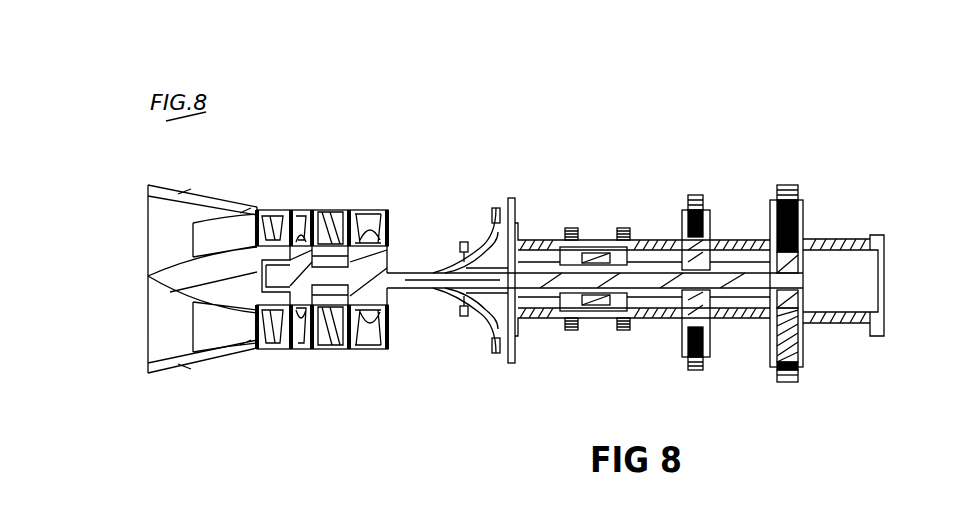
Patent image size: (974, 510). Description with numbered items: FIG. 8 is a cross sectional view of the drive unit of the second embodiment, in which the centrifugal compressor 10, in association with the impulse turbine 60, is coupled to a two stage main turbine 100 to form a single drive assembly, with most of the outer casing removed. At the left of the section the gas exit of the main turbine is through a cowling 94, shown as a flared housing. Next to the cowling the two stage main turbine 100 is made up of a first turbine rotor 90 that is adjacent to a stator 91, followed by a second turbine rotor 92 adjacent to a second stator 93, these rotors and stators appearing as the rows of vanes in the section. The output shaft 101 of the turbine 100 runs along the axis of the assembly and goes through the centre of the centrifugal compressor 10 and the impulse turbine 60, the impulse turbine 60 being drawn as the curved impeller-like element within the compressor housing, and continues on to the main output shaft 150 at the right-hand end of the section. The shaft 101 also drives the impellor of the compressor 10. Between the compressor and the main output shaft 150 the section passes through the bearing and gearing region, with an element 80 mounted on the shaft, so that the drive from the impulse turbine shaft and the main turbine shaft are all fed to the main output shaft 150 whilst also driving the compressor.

The cowling 94 is at (195, 190).
The two stage main turbine 100 is at (326, 279).
The second stator 93 is at (270, 352).
The second turbine rotor 92 is at (301, 350).
The stator 91 is at (338, 350).
The first turbine rotor 90 is at (376, 350).
The output shaft 101 is at (400, 268).
The impulse turbine 60 is at (501, 208).
The centrifugal compressor 10 is at (540, 205).
The bearing assembly 80 is at (735, 171).
The main output shaft 150 is at (836, 242).